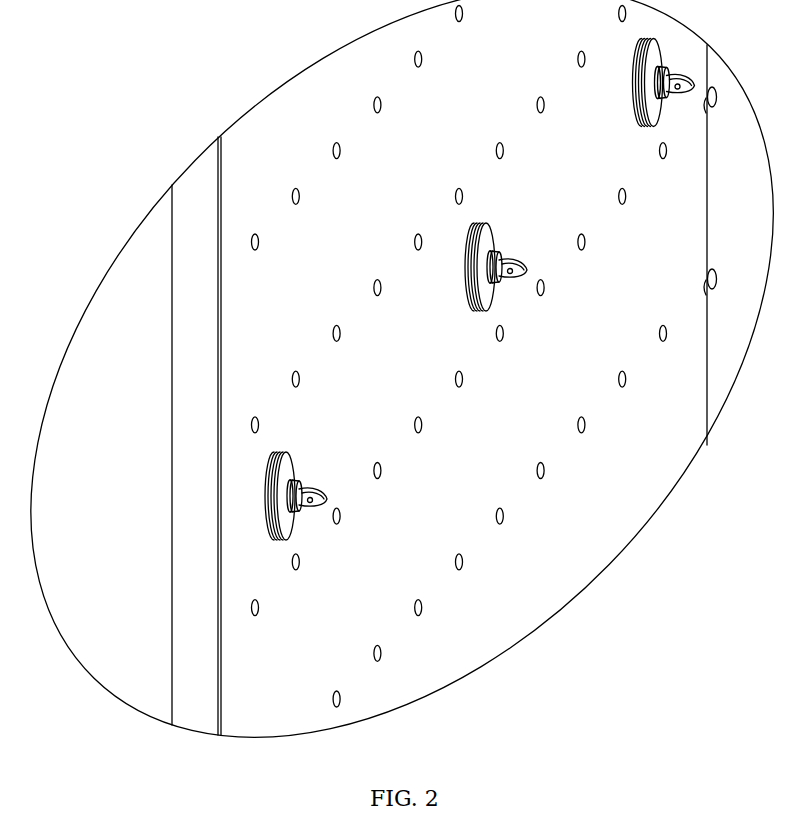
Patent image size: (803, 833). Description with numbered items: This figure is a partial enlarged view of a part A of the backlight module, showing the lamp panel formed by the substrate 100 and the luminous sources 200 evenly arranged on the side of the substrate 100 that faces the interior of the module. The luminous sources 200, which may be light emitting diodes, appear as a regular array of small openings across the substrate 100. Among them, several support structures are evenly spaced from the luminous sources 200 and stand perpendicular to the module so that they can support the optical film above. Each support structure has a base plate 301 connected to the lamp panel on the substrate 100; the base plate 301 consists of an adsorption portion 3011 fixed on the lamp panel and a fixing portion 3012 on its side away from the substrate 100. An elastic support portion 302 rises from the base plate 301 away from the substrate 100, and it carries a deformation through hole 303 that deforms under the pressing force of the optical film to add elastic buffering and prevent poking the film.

The part A is at (110, 267).
The substrate 100 is at (188, 412).
The luminous sources 200 is at (420, 57).
The base plate 301 is at (174, 496).
The adsorption portion 3011 is at (267, 485).
The fixing portion 3012 is at (282, 512).
The elastic support portion 302 is at (303, 482).
The deformation through hole 303 is at (305, 508).